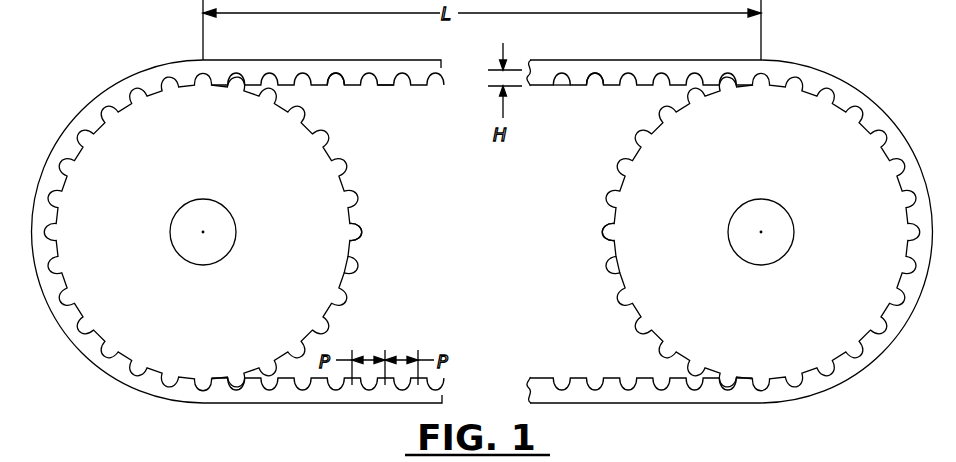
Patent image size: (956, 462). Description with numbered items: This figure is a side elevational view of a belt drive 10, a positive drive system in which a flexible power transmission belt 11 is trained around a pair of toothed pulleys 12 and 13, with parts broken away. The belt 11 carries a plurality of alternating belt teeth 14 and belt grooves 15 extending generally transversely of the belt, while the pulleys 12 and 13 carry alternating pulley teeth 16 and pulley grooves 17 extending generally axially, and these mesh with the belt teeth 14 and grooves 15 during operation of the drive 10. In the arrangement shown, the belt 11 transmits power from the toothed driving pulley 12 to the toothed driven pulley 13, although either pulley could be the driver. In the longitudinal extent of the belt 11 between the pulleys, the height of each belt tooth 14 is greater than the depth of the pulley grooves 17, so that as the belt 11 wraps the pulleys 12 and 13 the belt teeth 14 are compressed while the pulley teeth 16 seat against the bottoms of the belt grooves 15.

The belt drive 10 is at (482, 222).
The flexible power transmission belt 11 is at (845, 92).
The toothed driving pulley 12 is at (135, 340).
The toothed driven pulley 13 is at (820, 345).
The belt teeth 14 is at (421, 78).
The belt grooves 15 is at (338, 76).
The pulley teeth 16 is at (347, 163).
The pulley grooves 17 is at (353, 253).